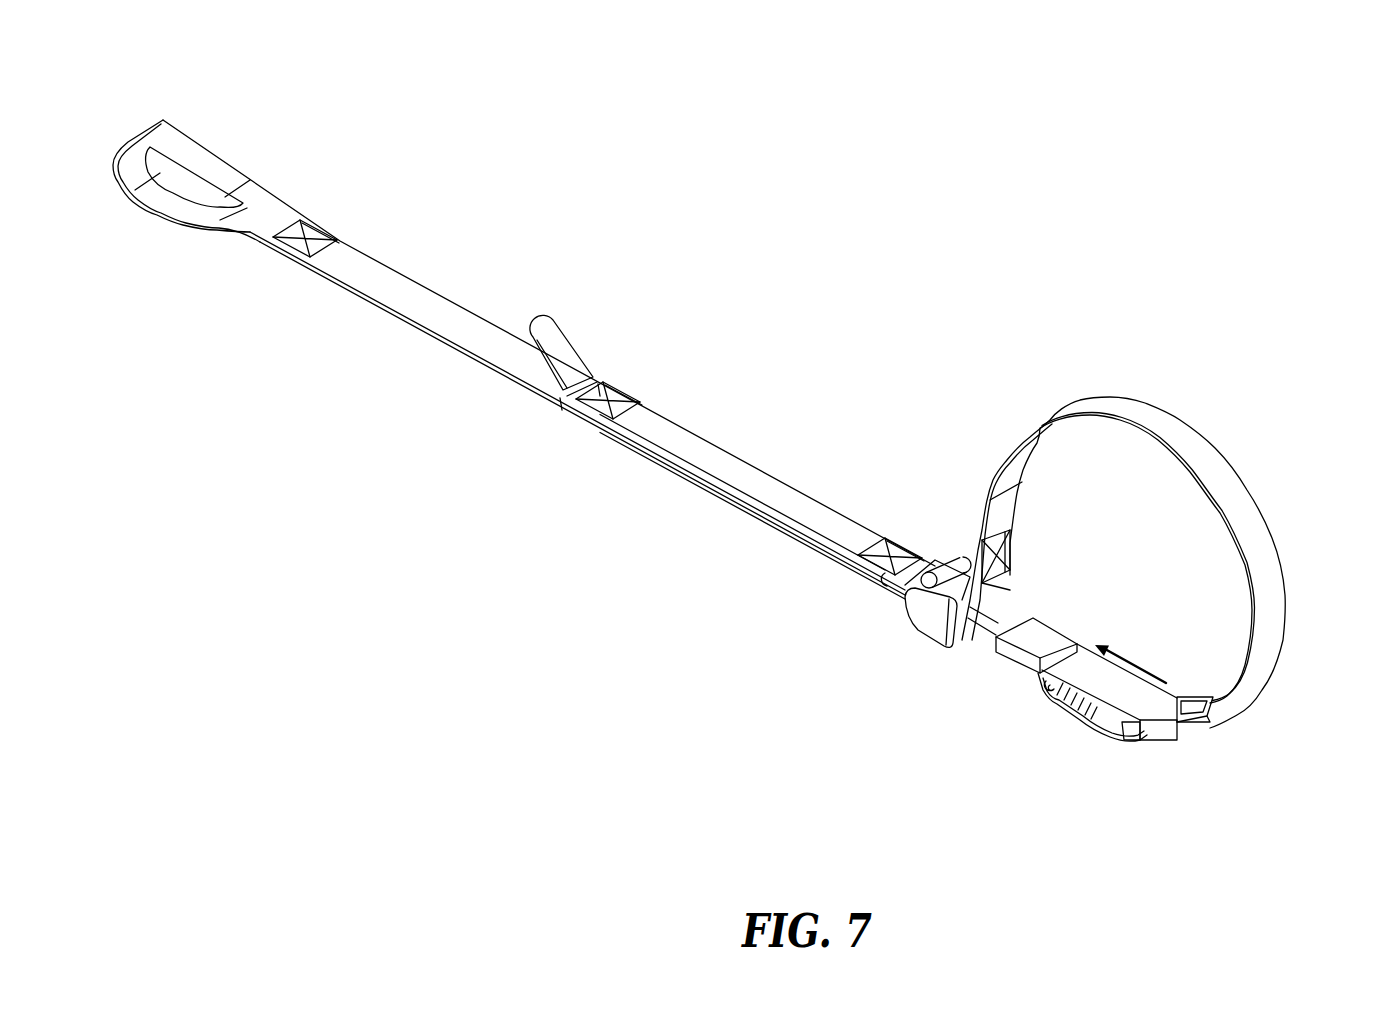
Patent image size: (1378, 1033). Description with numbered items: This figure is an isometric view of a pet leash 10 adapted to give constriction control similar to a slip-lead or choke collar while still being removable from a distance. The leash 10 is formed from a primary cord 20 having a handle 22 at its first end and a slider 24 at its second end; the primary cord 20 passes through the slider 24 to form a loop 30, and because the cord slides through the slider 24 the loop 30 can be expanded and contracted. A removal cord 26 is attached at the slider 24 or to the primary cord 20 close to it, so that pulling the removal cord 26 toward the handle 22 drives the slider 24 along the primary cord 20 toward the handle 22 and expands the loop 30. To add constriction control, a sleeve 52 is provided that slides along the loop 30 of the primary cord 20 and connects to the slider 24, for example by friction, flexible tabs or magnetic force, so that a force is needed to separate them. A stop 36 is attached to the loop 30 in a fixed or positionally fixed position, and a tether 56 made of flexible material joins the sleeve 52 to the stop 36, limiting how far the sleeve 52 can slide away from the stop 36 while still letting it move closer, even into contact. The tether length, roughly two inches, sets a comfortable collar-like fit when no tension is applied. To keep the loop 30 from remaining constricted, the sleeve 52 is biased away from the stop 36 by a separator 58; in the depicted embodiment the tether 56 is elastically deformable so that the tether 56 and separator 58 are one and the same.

The leash 10 is at (1270, 165).
The primary cord 20 is at (473, 358).
The handle 22 is at (213, 157).
The slider 24 is at (903, 618).
The removal cord 26 is at (810, 497).
The loop 30 is at (1208, 440).
The stop 36 is at (1173, 743).
The sleeve 52 is at (1010, 682).
The tether 56 is at (1093, 737).
The separator 58 is at (1092, 707).